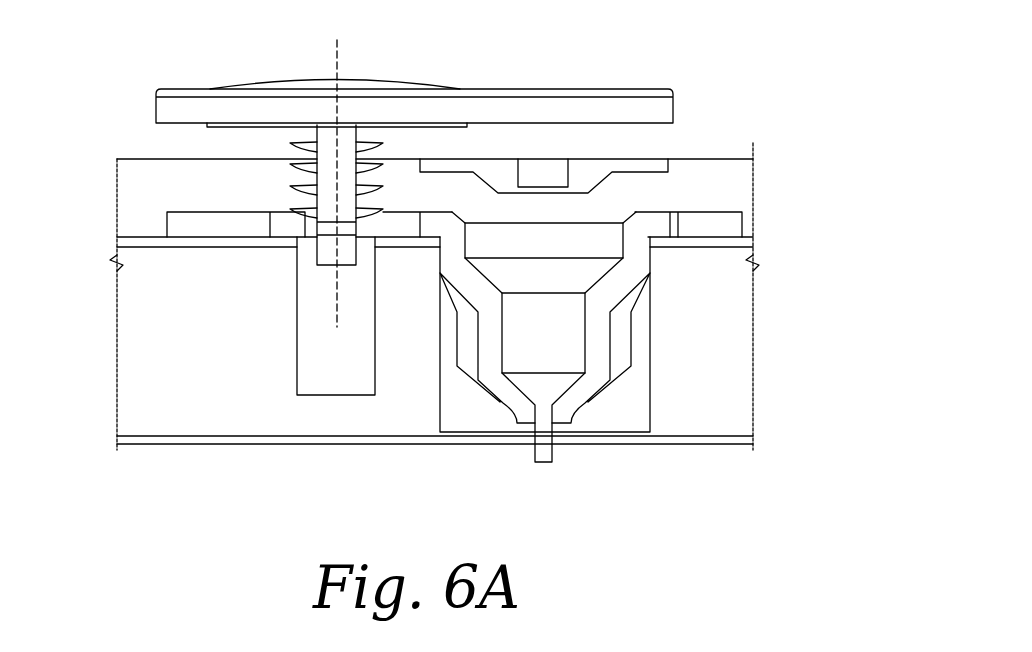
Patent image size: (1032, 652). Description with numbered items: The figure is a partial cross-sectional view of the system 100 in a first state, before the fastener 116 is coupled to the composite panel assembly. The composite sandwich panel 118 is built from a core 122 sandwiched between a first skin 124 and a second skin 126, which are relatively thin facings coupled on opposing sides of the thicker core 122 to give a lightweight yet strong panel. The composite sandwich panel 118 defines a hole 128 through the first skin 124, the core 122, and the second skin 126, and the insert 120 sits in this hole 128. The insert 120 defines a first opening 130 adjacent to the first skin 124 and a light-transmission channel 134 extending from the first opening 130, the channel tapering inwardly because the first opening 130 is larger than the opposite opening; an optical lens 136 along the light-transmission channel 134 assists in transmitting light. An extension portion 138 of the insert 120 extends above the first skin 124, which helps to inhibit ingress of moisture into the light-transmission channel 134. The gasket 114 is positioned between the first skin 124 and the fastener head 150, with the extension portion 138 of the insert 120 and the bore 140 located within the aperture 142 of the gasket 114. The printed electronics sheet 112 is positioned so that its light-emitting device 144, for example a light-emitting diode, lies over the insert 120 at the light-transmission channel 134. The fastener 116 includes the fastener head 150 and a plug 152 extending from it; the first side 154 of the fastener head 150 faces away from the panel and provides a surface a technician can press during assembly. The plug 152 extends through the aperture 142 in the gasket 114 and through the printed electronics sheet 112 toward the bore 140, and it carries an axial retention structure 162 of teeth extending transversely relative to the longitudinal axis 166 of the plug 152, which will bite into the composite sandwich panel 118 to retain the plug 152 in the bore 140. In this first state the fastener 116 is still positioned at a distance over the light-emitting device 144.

The system 100 is at (828, 30).
The printed electronics sheet 112 is at (717, 158).
The gasket 114 is at (733, 222).
The fastener 116 is at (618, 92).
The composite sandwich panel 118 is at (98, 463).
The insert 120 is at (637, 262).
The core 122 is at (737, 356).
The first skin 124 is at (757, 243).
The second skin 126 is at (753, 441).
The hole 128 is at (630, 420).
The first opening 130 is at (585, 212).
The light-transmission channel 134 is at (562, 357).
The optical lens 136 is at (522, 373).
The extension portion 138 is at (653, 227).
The bore 140 is at (317, 365).
The aperture 142 is at (270, 212).
The light-emitting device 144 is at (548, 167).
The fastener head 150 is at (464, 69).
The plug 152 is at (360, 232).
The first side 154 is at (187, 89).
The axial retention structure 162 is at (290, 163).
The longitudinal axis 166 is at (337, 48).